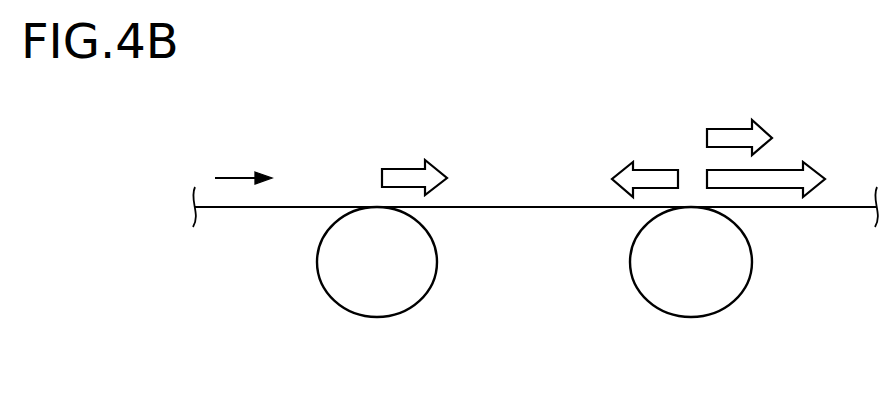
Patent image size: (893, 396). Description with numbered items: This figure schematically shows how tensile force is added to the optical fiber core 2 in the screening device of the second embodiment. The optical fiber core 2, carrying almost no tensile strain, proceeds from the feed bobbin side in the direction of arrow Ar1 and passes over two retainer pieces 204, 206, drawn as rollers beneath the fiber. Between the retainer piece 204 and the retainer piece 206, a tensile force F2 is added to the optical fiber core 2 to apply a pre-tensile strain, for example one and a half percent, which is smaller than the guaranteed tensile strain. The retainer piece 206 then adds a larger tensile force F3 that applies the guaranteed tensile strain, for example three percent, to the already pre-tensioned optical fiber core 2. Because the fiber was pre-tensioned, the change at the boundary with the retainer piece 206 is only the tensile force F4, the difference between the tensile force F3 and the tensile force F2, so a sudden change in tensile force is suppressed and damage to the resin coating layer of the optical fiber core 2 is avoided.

The optical fiber core 2 is at (318, 207).
The arrow Ar1 is at (232, 177).
The tensile force F2 is at (400, 170).
The tensile force F3 is at (786, 170).
The tensile force F4 is at (725, 129).
The retainer piece 204 is at (372, 318).
The retainer piece 206 is at (688, 318).